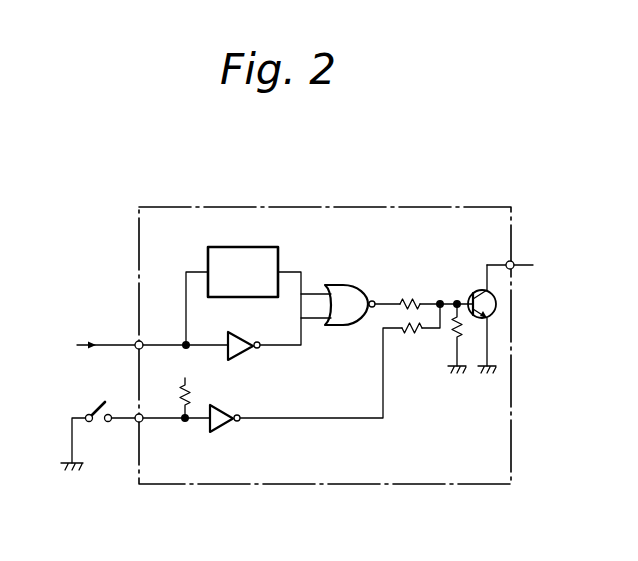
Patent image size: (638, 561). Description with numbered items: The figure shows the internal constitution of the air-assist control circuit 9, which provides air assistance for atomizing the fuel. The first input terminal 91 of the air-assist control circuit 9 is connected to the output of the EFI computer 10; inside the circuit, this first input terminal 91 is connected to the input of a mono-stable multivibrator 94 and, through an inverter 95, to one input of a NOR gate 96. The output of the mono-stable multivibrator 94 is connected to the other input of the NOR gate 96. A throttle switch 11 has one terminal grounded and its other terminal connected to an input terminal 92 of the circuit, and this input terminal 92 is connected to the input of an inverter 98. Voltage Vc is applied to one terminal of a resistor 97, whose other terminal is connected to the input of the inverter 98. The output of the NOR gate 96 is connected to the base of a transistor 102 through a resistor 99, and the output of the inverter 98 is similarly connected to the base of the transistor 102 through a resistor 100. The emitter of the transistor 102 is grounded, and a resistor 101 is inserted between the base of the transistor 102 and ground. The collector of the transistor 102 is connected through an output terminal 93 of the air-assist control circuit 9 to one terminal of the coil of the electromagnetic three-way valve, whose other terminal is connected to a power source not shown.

The air-assist control circuit 9 is at (411, 206).
The EFI computer 10 is at (89, 348).
The throttle switch 11 is at (98, 423).
The first input terminal 91 is at (136, 342).
The input terminal 92 is at (136, 414).
The output terminal 93 is at (513, 263).
The mono-stable multivibrator 94 is at (279, 261).
The inverter 95 is at (244, 333).
The NOR gate 96 is at (339, 326).
The resistor 97 is at (191, 389).
The inverter 98 is at (229, 432).
The resistor 99 is at (407, 298).
The resistor 100 is at (410, 333).
The resistor 101 is at (452, 345).
The transistor 102 is at (478, 291).